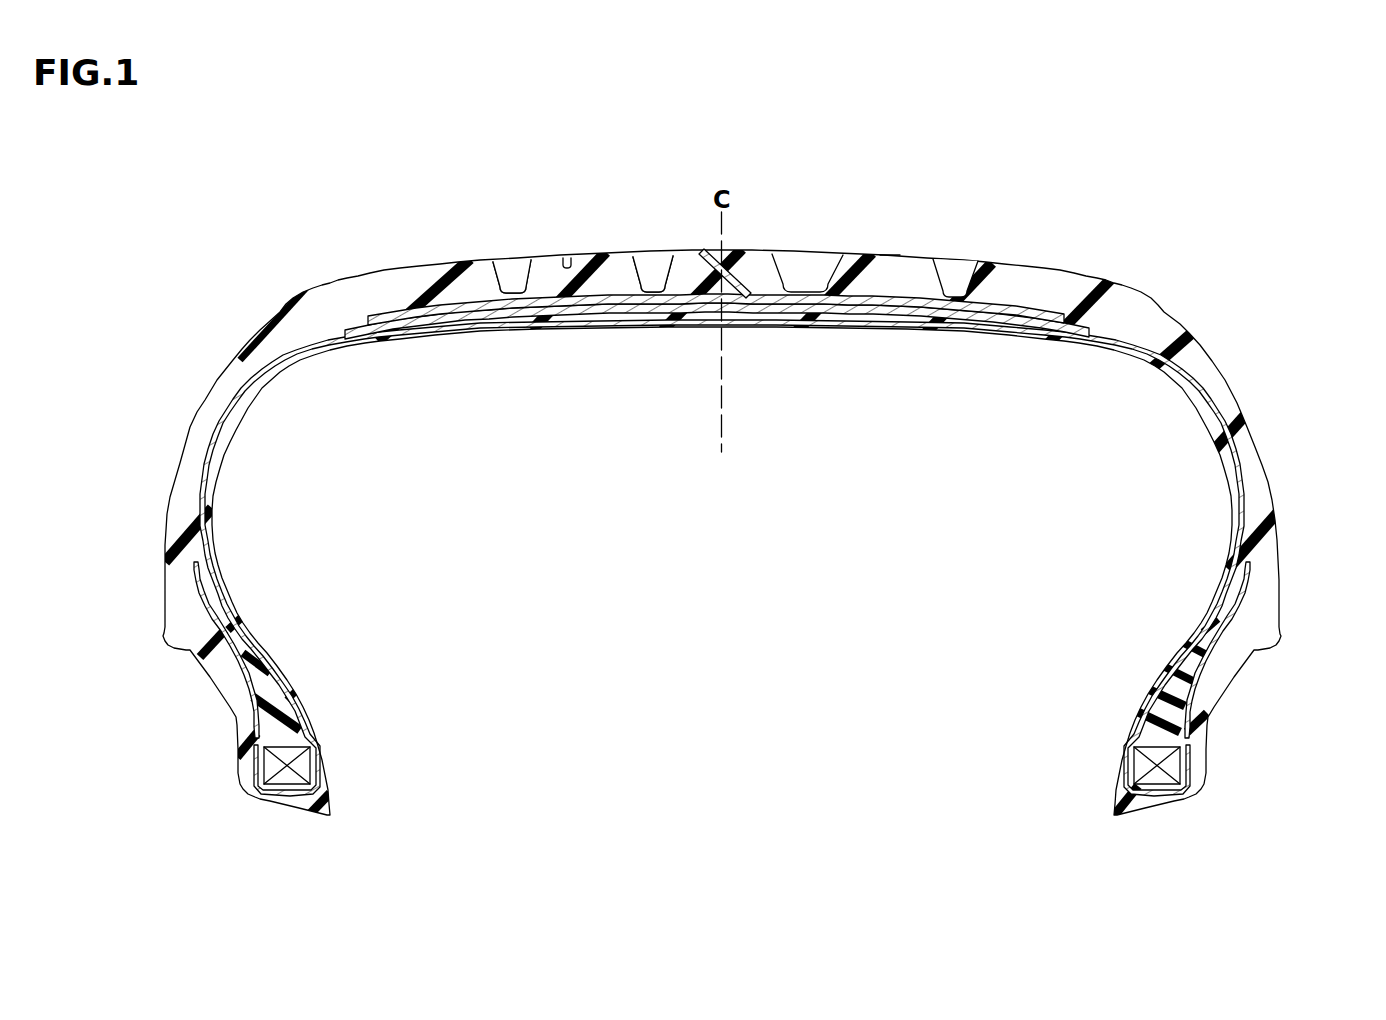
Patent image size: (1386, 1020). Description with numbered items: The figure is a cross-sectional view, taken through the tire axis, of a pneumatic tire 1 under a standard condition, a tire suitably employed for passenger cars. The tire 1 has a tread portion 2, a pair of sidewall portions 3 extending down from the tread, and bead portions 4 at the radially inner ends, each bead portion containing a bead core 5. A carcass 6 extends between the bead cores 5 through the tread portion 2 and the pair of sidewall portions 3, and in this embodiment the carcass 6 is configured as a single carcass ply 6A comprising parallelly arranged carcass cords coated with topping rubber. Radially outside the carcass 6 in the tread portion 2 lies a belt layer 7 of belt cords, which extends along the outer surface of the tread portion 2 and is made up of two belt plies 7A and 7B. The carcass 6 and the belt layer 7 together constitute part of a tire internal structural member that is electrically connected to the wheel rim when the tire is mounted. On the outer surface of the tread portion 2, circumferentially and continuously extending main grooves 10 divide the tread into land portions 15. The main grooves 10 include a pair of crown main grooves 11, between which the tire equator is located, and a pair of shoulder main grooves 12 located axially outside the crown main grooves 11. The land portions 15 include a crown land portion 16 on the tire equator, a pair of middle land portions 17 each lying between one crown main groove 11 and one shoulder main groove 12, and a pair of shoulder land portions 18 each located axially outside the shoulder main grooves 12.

The pneumatic tire 1 is at (1152, 232).
The tread portion 2 is at (922, 215).
The sidewall portions 3 is at (180, 437).
The bead portions 4 is at (225, 717).
The bead cores 5 is at (297, 767).
The carcass 6 is at (722, 558).
The carcass ply 6A is at (1240, 500).
The belt layer 7 is at (717, 389).
The belt ply 7A is at (585, 303).
The belt ply 7B is at (647, 308).
The main grooves 10 is at (513, 286).
The crown main grooves 11 is at (804, 283).
The shoulder main grooves 12 is at (960, 283).
The land portions 15 is at (748, 212).
The crown land portion 16 is at (758, 250).
The middle land portions 17 is at (583, 258).
The shoulder land portions 18 is at (413, 262).